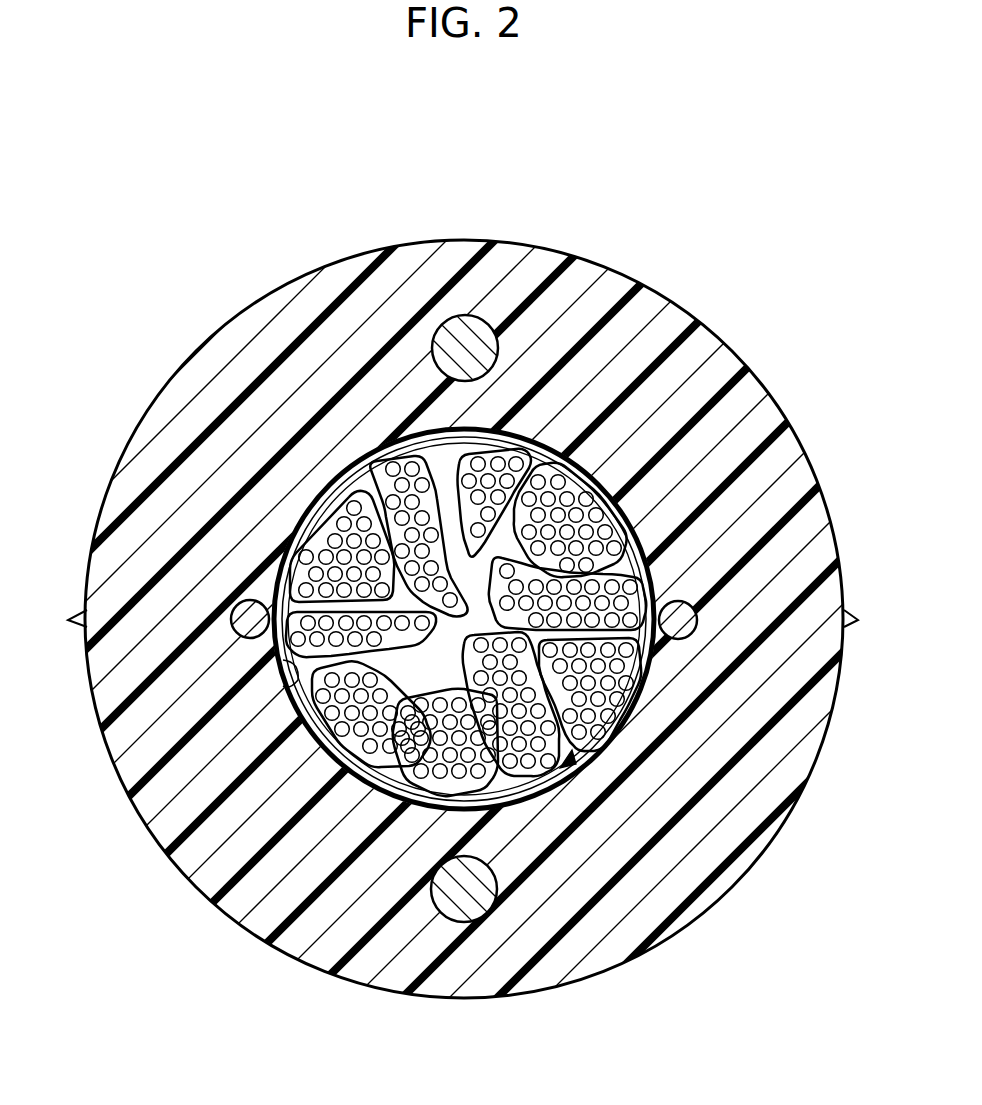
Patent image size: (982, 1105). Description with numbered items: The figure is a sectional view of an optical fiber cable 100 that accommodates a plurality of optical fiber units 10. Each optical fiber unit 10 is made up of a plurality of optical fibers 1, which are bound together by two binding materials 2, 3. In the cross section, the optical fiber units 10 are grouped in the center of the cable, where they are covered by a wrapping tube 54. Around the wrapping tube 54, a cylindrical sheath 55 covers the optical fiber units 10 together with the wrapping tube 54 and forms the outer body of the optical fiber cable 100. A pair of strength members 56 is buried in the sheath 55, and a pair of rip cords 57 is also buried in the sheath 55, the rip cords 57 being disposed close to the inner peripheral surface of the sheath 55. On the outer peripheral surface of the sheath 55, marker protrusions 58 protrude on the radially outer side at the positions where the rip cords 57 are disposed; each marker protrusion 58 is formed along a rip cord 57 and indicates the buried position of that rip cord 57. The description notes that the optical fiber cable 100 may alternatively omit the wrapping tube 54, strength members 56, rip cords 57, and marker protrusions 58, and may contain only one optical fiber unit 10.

The optical fiber cable 100 is at (188, 222).
The sheath 55 is at (323, 330).
The marker protrusion 58 is at (73, 627).
The strength member 56 is at (462, 921).
The rip cord 57 is at (680, 642).
The binding material 2 is at (464, 746).
The binding material 3 is at (522, 785).
The optical fiber unit 10 is at (568, 765).
The wrapping tube 54 is at (285, 667).
The optical fiber 1 is at (652, 640).